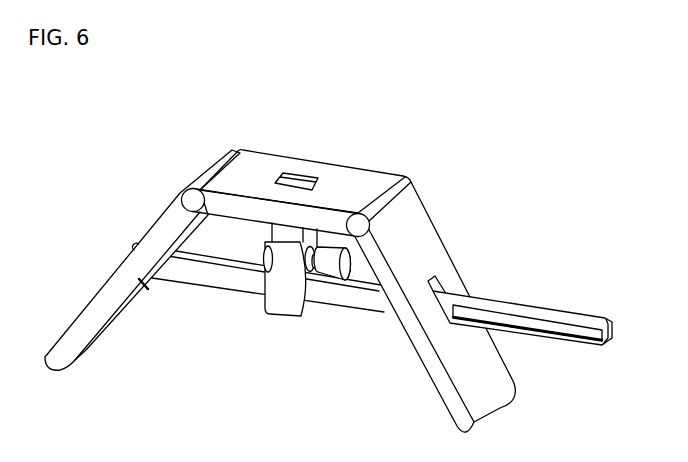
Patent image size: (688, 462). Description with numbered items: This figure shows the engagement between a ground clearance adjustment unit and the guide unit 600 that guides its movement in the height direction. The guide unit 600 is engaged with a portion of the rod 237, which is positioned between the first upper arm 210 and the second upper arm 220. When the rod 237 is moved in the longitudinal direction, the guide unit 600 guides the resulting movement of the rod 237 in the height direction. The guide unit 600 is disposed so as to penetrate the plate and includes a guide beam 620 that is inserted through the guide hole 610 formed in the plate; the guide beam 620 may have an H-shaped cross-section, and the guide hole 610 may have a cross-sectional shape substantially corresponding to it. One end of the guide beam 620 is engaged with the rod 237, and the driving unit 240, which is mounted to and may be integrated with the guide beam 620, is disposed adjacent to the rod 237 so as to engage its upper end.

The first upper arm 210 is at (422, 212).
The second upper arm 220 is at (108, 298).
The rod 237 is at (543, 311).
The driving unit 240 is at (332, 270).
The guide unit 600 is at (283, 313).
The guide hole 610 is at (300, 177).
The guide beam 620 is at (285, 315).